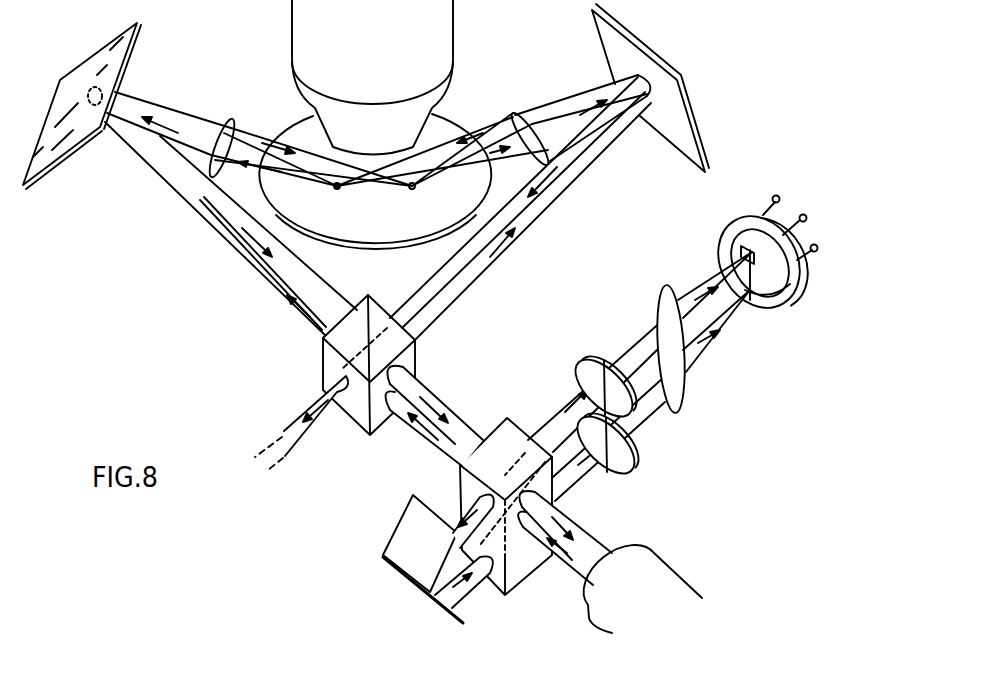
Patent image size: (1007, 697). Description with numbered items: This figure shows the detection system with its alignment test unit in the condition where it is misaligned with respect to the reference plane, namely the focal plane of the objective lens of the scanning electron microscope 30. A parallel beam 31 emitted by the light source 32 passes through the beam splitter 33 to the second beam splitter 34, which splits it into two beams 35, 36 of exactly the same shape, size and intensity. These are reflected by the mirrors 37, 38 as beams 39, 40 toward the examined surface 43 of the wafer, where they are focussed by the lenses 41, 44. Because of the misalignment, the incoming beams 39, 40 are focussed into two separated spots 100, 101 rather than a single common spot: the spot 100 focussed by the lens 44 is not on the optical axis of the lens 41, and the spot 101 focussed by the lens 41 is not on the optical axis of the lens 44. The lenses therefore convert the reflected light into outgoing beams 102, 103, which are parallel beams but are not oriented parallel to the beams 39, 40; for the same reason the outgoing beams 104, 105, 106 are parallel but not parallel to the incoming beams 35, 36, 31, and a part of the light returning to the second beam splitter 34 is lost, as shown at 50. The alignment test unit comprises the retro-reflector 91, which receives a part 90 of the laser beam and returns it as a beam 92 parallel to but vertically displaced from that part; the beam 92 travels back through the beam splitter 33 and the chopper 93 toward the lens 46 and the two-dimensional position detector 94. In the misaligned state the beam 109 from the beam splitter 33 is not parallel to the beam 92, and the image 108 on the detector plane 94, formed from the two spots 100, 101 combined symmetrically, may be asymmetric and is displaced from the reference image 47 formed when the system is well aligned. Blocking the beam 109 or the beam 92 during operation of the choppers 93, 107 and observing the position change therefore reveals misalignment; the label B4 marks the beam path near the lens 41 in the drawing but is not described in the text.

The scanning electron microscope 30 is at (443, 47).
The parallel beam 31 is at (447, 450).
The light source 32 is at (682, 597).
The beam splitter 33 is at (515, 572).
The second beam splitter 34 is at (358, 410).
The beam 35 is at (528, 228).
The beam 36 is at (235, 247).
The mirror 37 is at (660, 80).
The mirror 38 is at (118, 44).
The beam 39 is at (562, 108).
The beam 40 is at (258, 142).
The lens 41 is at (520, 117).
The examined surface 43 is at (374, 233).
The lens 44 is at (230, 120).
The lens 46 is at (660, 302).
The image 47 is at (756, 282).
The lost beam part 50 is at (285, 438).
The beam part 90 is at (458, 528).
The retro-reflector 91 is at (405, 551).
The beam 92 is at (458, 594).
The chopper 93 is at (625, 463).
The two-dimensional position detector 94 is at (774, 302).
The spot 100 is at (414, 189).
The spot 101 is at (337, 189).
The outgoing beam 102 is at (623, 100).
The outgoing beam 103 is at (162, 118).
The outgoing beam 104 is at (572, 157).
The outgoing beam 105 is at (283, 273).
The outgoing beam 106 is at (448, 412).
The chopper 107 is at (619, 415).
The image 108 is at (728, 230).
The beam 109 is at (563, 413).
The light beam B4 is at (478, 133).